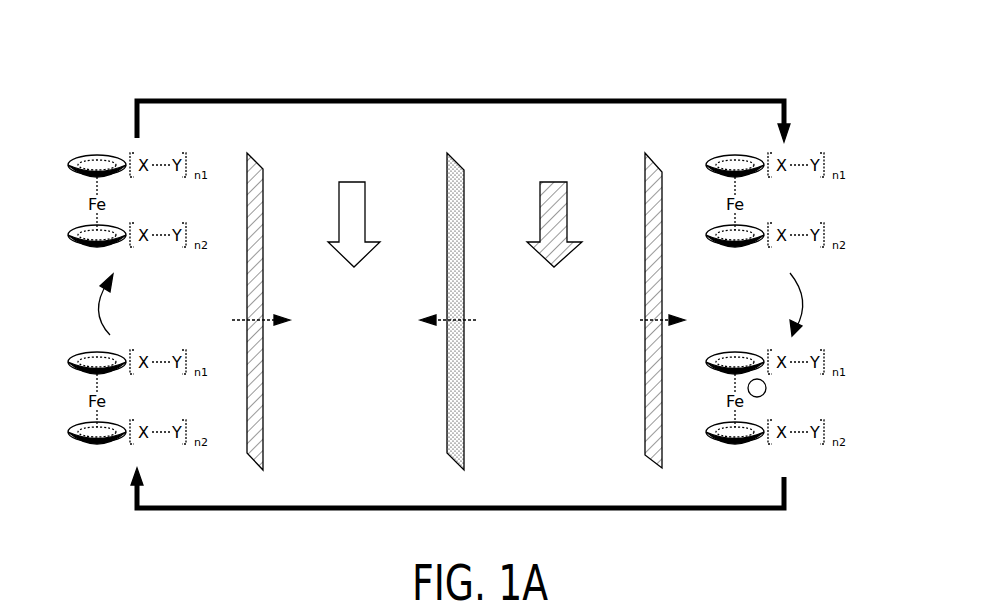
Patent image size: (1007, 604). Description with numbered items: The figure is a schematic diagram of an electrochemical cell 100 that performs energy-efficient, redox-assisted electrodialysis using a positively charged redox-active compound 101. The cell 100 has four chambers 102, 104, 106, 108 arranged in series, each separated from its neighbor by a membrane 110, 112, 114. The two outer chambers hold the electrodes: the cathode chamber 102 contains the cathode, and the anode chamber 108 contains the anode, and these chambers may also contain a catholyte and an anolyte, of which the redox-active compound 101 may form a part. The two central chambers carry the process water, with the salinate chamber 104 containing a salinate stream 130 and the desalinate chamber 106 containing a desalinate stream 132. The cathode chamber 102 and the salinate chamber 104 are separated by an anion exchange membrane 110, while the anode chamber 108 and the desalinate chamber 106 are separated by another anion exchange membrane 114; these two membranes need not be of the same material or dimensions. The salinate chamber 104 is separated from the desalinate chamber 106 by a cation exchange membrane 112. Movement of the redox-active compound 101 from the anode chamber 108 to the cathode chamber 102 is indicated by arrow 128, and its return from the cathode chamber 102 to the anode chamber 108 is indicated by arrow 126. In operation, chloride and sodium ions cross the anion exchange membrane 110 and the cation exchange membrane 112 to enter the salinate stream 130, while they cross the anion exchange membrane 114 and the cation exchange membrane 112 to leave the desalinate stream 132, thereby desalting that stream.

The electrochemical cell 100 is at (105, 72).
The redox-active compound 101 is at (80, 128).
The cathode chamber 102 is at (209, 326).
The salinate chamber 104 is at (370, 373).
The desalinate chamber 106 is at (572, 373).
The anode chamber 108 is at (760, 334).
The anion exchange membrane 110 is at (264, 408).
The cation exchange membrane 112 is at (465, 408).
The anion exchange membrane 114 is at (663, 297).
The arrow 126 is at (255, 98).
The arrow 128 is at (245, 510).
The salinate stream 130 is at (345, 262).
The desalinate stream 132 is at (554, 268).